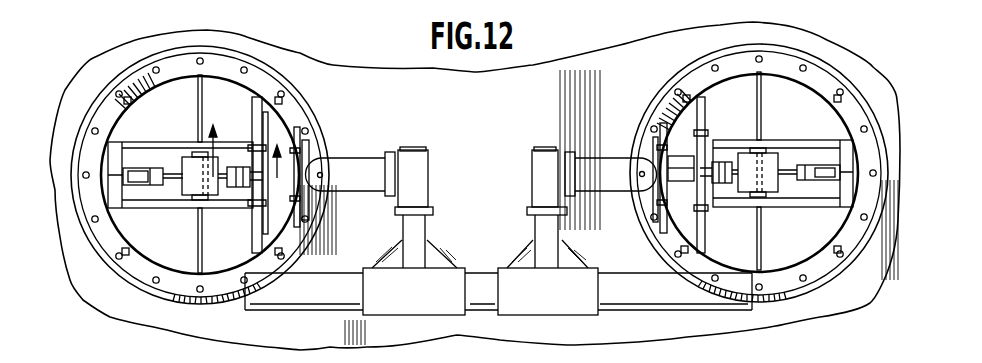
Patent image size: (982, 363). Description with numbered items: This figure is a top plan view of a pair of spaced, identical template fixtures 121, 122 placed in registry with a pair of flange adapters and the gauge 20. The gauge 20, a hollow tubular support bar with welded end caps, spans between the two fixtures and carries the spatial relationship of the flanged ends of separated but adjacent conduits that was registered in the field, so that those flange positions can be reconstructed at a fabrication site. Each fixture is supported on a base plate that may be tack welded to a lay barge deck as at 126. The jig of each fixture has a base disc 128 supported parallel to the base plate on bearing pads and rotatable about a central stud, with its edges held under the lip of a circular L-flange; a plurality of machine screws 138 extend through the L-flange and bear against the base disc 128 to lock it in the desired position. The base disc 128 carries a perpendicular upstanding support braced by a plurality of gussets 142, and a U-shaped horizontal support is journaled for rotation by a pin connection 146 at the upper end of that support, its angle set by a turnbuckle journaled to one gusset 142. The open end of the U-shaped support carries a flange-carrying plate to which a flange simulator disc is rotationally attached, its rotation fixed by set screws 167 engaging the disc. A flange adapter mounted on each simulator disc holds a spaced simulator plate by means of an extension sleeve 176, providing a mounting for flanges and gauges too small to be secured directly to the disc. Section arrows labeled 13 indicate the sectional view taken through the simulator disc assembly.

The template fixture 121 is at (288, 73).
The template fixture 122 is at (830, 63).
The base disc 128 is at (117, 123).
The machine screws 138 is at (157, 83).
The gussets 142 is at (812, 206).
The pin connection 146 is at (197, 210).
The set screws 167 is at (248, 143).
The extension sleeve 176 is at (682, 165).
The section line of FIG. 13 is at (249, 143).
The gauge 20 is at (313, 316).
The tack weld 126 is at (458, 121).